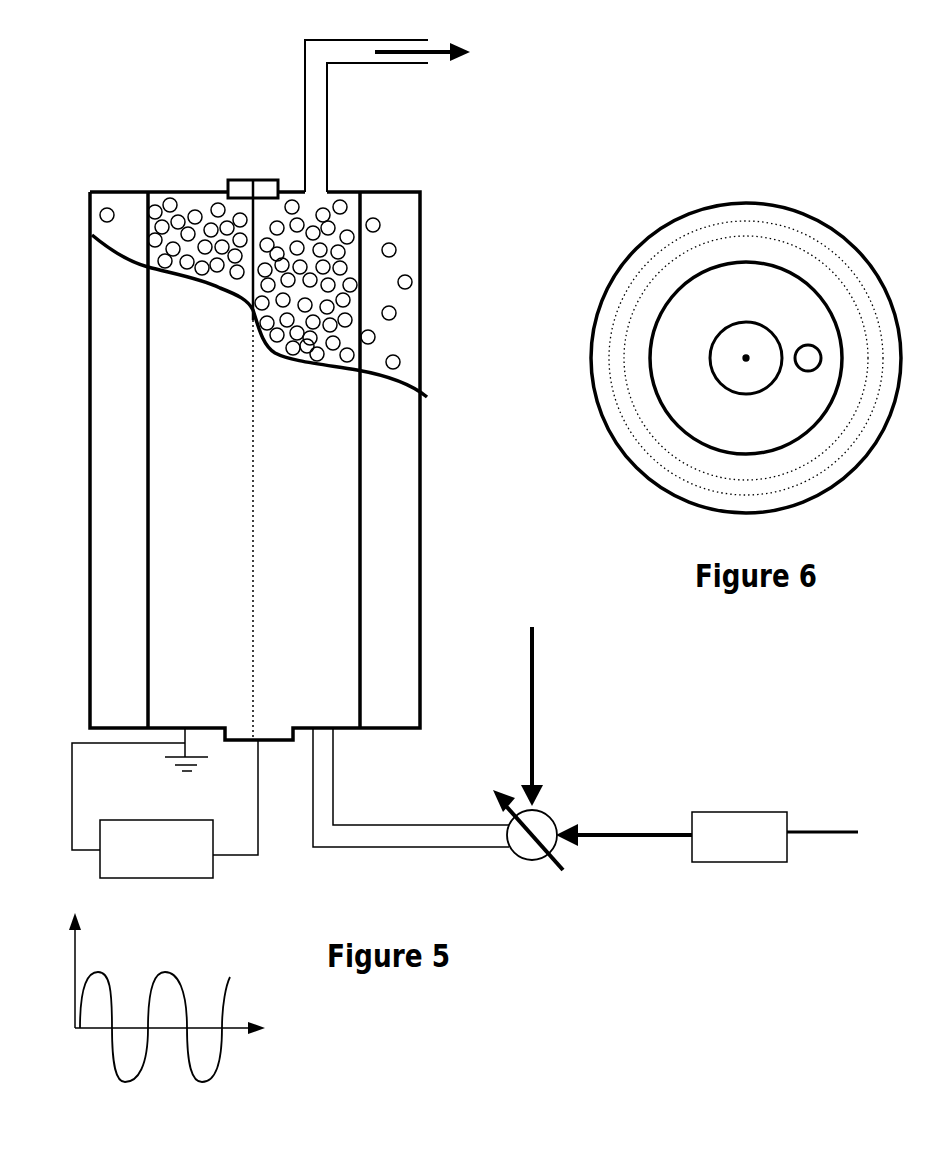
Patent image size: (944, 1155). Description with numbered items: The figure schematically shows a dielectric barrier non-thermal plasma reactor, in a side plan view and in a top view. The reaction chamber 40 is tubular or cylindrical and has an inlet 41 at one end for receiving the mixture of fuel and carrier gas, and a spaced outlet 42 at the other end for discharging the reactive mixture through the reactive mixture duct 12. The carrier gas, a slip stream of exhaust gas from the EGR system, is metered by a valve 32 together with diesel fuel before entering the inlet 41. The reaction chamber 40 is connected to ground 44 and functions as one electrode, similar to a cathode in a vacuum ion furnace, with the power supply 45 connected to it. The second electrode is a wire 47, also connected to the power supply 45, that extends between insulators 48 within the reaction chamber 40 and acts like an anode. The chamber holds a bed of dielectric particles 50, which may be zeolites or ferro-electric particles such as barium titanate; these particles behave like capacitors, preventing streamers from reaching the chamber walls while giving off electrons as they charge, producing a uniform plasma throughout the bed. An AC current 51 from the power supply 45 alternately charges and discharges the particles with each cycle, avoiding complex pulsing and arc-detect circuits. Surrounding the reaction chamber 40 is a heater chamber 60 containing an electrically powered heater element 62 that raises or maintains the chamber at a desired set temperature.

In FIG. 5, the reactive mixture duct 12 is at (365, 65).
In FIG. 5, the valve 32 is at (528, 860).
In FIG. 5, the reaction chamber 40 is at (362, 205).
In FIG. 6, the reaction chamber 40 is at (732, 262).
In FIG. 5, the inlet 41 is at (340, 733).
In FIG. 5, the outlet 42 is at (330, 190).
In FIG. 6, the outlet 42 is at (815, 370).
In FIG. 5, the ground 44 is at (198, 757).
In FIG. 5, the power supply 45 is at (133, 820).
In FIG. 5, the wire 47 is at (247, 218).
In FIG. 6, the wire 47 is at (746, 358).
In FIG. 5, the insulators 48 is at (242, 180).
In FIG. 6, the insulators 48 is at (732, 325).
In FIG. 5, the dielectric particles 50 is at (168, 202).
In FIG. 5, the AC current 51 is at (168, 974).
In FIG. 5, the heater chamber 60 is at (420, 225).
In FIG. 6, the heater chamber 60 is at (793, 205).
In FIG. 5, the heater element 62 is at (412, 278).
In FIG. 6, the heater element 62 is at (818, 240).